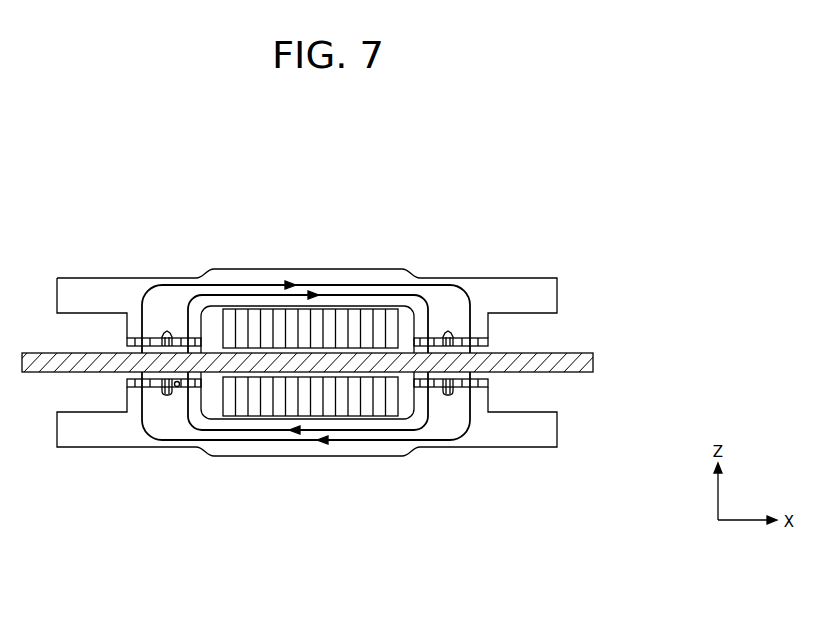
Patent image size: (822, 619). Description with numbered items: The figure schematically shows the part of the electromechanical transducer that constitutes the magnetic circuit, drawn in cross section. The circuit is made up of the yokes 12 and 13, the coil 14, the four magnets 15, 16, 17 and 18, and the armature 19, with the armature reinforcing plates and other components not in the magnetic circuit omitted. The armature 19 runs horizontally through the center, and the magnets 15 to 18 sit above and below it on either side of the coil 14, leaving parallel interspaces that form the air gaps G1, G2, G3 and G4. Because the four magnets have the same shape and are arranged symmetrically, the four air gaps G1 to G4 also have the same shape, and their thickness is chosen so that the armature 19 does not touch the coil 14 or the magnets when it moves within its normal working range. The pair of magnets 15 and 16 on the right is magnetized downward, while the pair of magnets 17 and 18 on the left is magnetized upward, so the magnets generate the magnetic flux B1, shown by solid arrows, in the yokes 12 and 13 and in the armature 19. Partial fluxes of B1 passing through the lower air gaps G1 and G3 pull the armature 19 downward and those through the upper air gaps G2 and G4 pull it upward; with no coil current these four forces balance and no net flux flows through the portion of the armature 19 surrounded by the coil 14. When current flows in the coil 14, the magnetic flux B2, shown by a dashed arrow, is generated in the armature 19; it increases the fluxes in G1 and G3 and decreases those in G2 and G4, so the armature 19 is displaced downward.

The yoke 12 is at (262, 443).
The yoke 13 is at (263, 267).
The coil 14 is at (353, 400).
The magnet 15 is at (481, 390).
The magnet 16 is at (480, 337).
The magnet 17 is at (135, 388).
The magnet 18 is at (134, 337).
The armature 19 is at (593, 361).
The magnetic flux B1 is at (203, 284).
The magnetic flux B2 is at (292, 360).
The air gap G1 is at (487, 376).
The air gap G2 is at (487, 348).
The air gap G3 is at (123, 375).
The air gap G4 is at (123, 350).